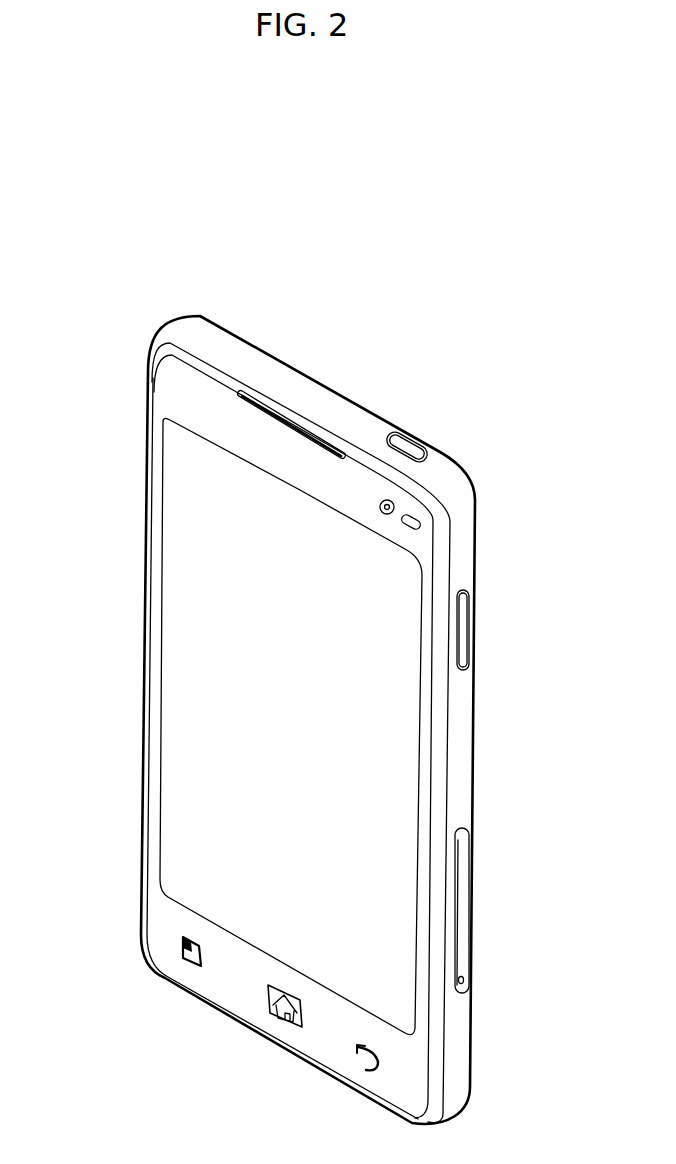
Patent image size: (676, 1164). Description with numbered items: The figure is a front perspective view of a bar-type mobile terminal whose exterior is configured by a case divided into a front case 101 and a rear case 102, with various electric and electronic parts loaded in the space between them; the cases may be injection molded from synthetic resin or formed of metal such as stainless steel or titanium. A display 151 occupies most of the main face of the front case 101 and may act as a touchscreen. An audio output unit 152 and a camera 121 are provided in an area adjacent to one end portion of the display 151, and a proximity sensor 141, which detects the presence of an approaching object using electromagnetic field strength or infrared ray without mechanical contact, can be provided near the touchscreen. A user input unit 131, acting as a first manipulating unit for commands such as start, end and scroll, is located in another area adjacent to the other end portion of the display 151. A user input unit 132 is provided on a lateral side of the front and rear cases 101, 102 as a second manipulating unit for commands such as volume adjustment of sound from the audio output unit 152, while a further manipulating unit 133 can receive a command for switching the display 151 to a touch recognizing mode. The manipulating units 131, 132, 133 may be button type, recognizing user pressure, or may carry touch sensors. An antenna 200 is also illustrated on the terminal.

The front case 101 is at (435, 1077).
The rear case 102 is at (465, 498).
The camera 121 is at (393, 507).
The user input unit 131 is at (277, 1015).
The user input unit 132 is at (465, 632).
The manipulating unit 133 is at (407, 447).
The proximity sensor 141 is at (417, 523).
The display 151 is at (178, 688).
The audio output unit 152 is at (288, 420).
The antenna 200 is at (463, 912).